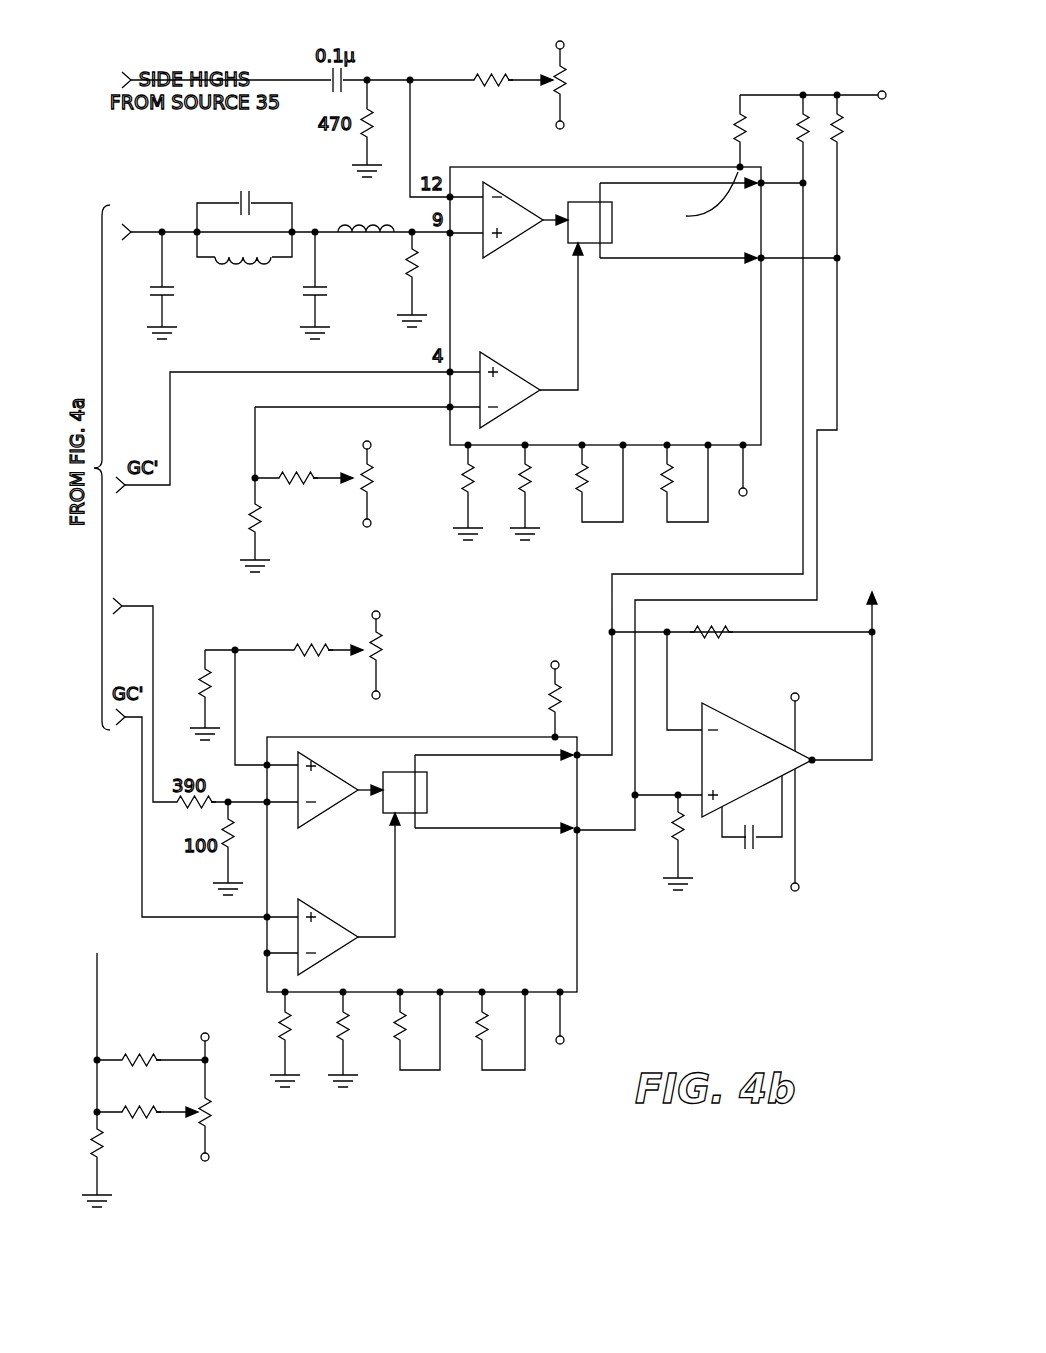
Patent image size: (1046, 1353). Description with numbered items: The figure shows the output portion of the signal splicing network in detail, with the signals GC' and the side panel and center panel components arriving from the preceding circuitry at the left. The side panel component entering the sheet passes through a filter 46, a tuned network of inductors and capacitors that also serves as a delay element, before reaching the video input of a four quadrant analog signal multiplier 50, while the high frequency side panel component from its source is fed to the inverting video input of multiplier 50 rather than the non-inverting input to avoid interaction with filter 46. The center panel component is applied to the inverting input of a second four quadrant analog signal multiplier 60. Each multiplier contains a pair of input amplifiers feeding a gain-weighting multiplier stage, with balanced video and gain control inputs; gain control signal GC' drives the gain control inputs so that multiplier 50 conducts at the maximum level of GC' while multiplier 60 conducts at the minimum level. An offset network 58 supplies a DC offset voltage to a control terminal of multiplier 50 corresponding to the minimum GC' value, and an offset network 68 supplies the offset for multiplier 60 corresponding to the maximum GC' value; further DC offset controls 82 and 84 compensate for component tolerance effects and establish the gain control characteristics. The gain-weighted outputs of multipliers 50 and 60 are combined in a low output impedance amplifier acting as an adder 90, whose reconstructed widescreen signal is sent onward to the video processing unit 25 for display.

The DC offset control 84 is at (572, 86).
The filter 46 is at (286, 254).
The offset network 58 is at (329, 501).
The four quadrant analog signal multiplier 50 is at (763, 437).
The DC offset control 82 is at (310, 662).
The four quadrant analog signal multiplier 60 is at (577, 957).
The adder 90 is at (750, 772).
The offset network 68 is at (183, 1085).
The unit 25 is at (865, 564).